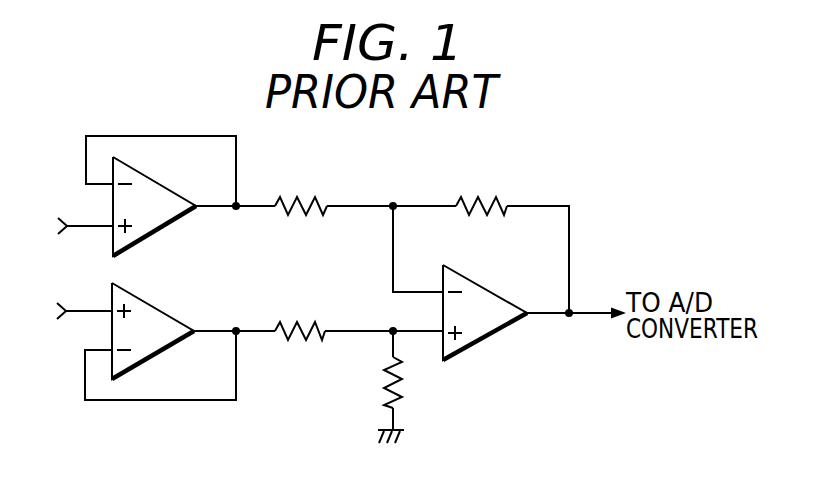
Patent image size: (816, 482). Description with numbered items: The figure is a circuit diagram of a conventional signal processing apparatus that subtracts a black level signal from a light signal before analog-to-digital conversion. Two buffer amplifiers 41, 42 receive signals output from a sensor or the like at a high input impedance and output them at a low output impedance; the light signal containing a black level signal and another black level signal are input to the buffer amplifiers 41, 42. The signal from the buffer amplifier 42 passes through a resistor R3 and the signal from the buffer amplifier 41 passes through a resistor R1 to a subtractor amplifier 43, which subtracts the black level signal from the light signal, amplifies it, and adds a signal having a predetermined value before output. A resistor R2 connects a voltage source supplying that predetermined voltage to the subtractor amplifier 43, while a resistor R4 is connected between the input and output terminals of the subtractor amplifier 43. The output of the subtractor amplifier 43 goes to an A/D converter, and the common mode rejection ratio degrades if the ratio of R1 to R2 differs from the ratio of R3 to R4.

The buffer amplifier 41 is at (160, 308).
The buffer amplifier 42 is at (160, 183).
The subtractor amplifier 43 is at (492, 287).
The resistor R1 is at (300, 315).
The resistor R2 is at (414, 382).
The resistor R3 is at (301, 190).
The resistor R4 is at (481, 191).